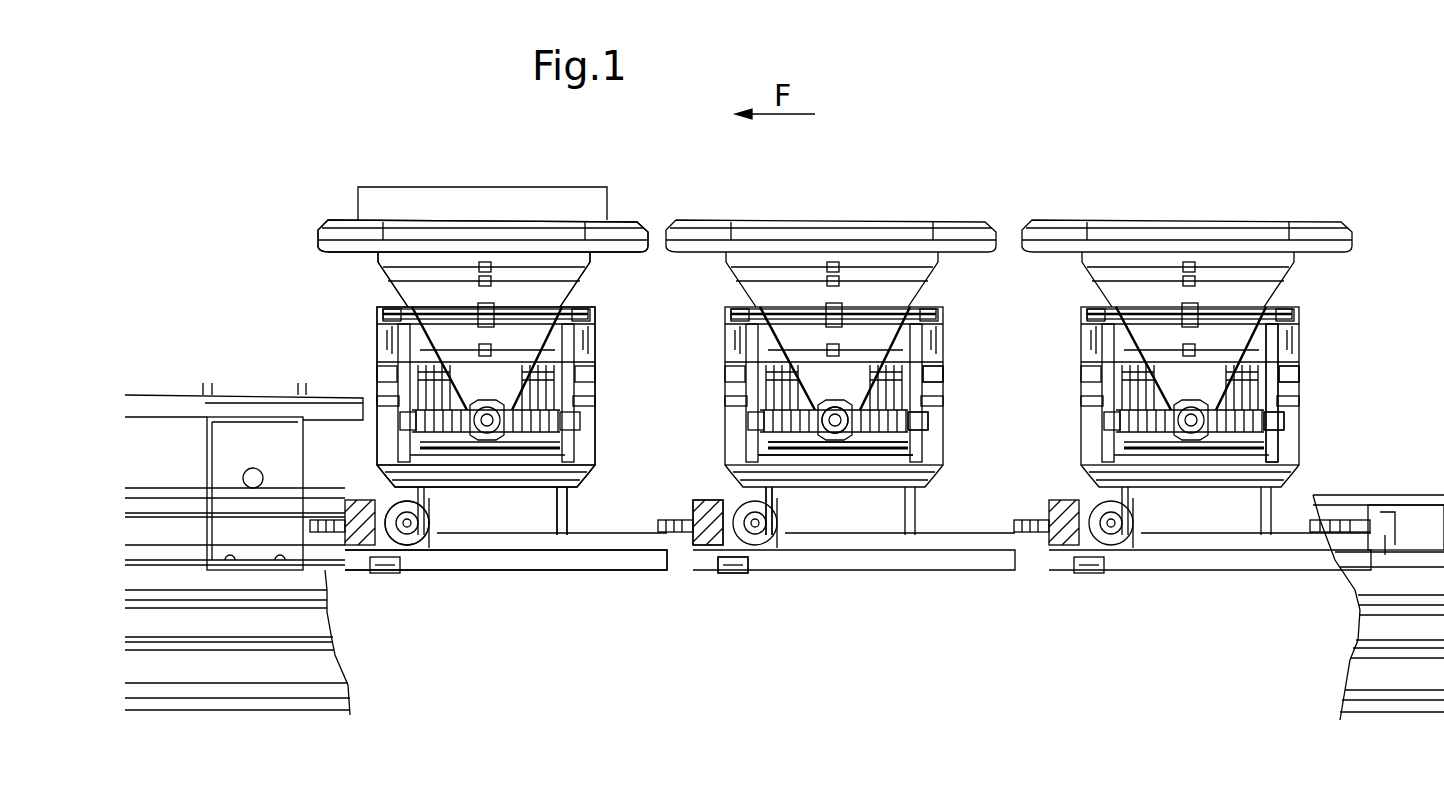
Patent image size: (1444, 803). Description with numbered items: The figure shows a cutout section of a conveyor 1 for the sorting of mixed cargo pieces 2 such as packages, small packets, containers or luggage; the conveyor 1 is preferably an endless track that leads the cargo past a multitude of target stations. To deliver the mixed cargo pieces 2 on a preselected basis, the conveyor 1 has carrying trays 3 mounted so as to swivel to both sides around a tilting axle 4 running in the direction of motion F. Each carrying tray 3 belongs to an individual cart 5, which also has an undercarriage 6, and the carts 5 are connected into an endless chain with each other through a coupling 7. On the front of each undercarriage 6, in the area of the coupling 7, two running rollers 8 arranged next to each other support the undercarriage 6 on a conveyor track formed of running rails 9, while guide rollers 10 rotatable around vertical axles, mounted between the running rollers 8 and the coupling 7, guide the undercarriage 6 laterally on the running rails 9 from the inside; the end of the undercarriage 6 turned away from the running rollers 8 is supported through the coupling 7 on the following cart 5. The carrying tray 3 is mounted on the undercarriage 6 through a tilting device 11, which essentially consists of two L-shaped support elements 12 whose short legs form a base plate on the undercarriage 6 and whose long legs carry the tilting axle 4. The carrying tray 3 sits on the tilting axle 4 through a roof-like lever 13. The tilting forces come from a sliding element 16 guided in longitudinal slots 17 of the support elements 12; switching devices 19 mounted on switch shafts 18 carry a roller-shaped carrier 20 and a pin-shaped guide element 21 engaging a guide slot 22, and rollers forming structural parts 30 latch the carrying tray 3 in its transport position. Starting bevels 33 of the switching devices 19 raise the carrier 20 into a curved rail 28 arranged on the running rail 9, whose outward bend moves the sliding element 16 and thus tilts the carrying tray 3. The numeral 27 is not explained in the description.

The conveyor 1 is at (163, 304).
The mixed cargo pieces 2 is at (541, 200).
The carrying tray 3 is at (616, 237).
The tilting axle 4 is at (408, 305).
The cart 5 is at (474, 143).
The undercarriage 6 is at (503, 536).
The coupling 7 is at (673, 547).
The running rollers 8 is at (410, 542).
The running rails 9 is at (227, 672).
The guide rollers 10 is at (728, 597).
The tilting device 11 is at (640, 408).
The support element 12 is at (596, 452).
The lever 13 is at (1232, 345).
The sliding element 16 is at (1288, 420).
The longitudinal slot 17 is at (1285, 432).
The switch shaft 18 is at (942, 423).
The switching device 19 is at (885, 443).
The carrier 20 is at (848, 407).
The guide element 21 is at (1272, 375).
The guide slot 22 is at (926, 386).
The bracket plate 27 is at (240, 465).
The curved rail 28 is at (165, 408).
The structural parts 30 is at (561, 490).
The starting bevels 33 is at (795, 490).